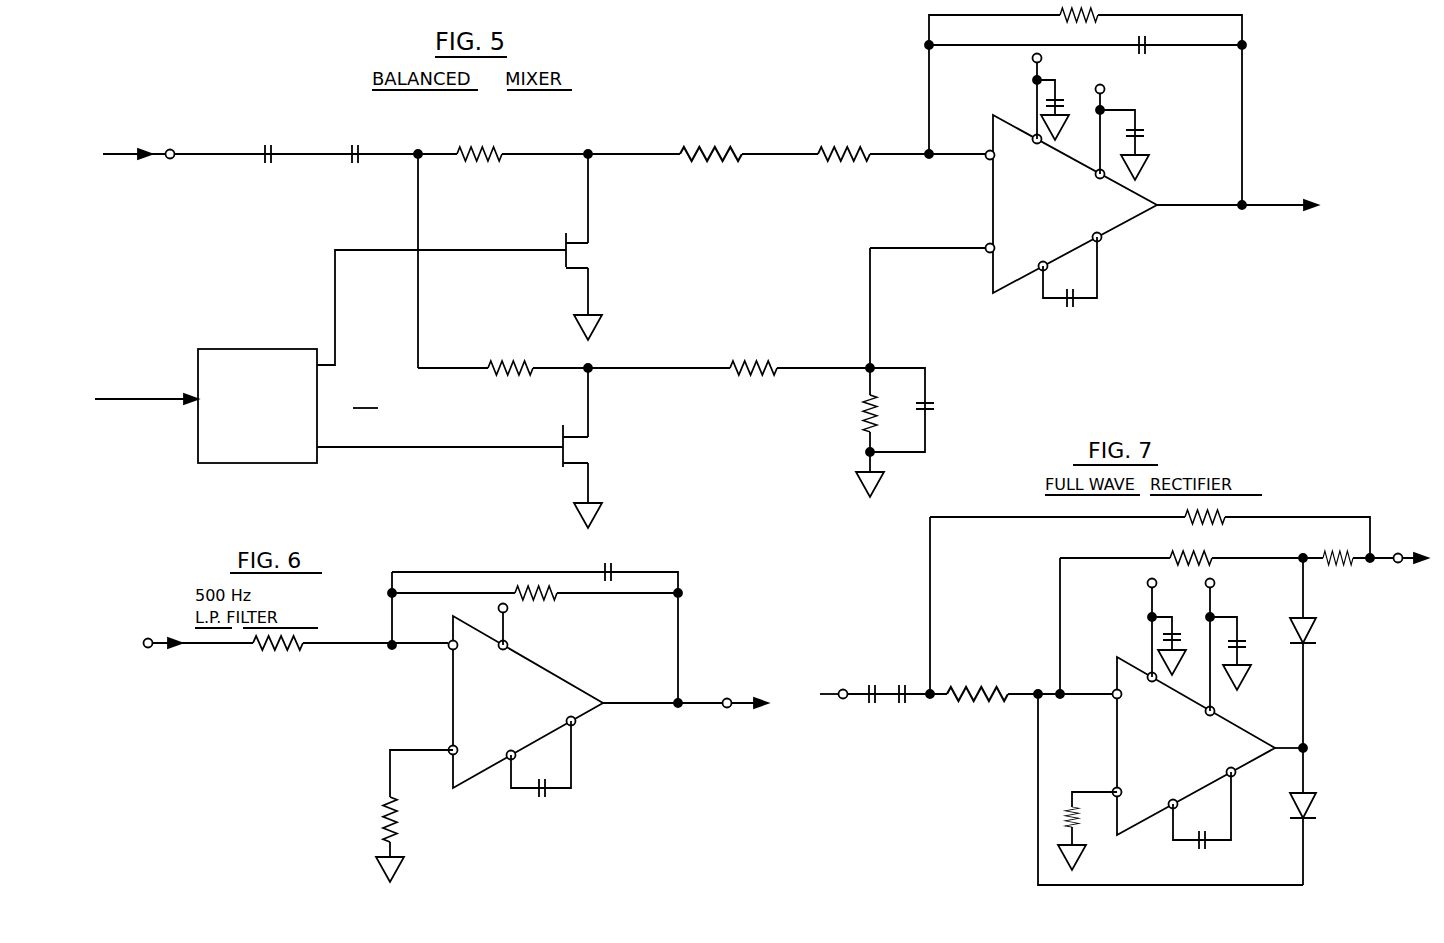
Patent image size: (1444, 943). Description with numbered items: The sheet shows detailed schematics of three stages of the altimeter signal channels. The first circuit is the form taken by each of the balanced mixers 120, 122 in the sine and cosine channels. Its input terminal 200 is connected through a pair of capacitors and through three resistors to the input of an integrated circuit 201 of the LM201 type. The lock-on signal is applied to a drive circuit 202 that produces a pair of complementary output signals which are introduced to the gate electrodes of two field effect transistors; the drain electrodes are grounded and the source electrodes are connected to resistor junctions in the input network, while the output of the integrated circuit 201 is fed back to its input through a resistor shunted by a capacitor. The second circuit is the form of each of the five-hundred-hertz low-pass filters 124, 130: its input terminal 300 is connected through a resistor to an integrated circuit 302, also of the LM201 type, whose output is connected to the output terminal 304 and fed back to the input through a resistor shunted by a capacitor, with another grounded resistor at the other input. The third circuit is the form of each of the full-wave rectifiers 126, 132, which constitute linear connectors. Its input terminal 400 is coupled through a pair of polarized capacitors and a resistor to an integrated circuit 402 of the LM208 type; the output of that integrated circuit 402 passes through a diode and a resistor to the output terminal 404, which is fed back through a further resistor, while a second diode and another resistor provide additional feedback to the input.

In FIG. 5, the balanced mixer 120 is at (618, 90).
In FIG. 5, the balanced mixer 122 is at (663, 90).
In FIG. 5, the input terminal 200 is at (170, 160).
In FIG. 5, the integrated circuit 201 is at (1010, 205).
In FIG. 5, the drive circuit 202 is at (220, 358).
In FIG. 6, the 500 Hz low-pass filter 124 is at (358, 609).
In FIG. 6, the 500 Hz low-pass filter 130 is at (358, 635).
In FIG. 6, the input terminal 300 is at (146, 648).
In FIG. 6, the integrated circuit 302 is at (550, 684).
In FIG. 6, the output terminal 304 is at (722, 709).
In FIG. 7, the full-wave rectifier 126 is at (1310, 495).
In FIG. 7, the full-wave rectifier 132 is at (1356, 495).
In FIG. 7, the input terminal 400 is at (838, 690).
In FIG. 7, the integrated circuit 402 is at (1158, 821).
In FIG. 7, the output terminal 404 is at (1395, 553).